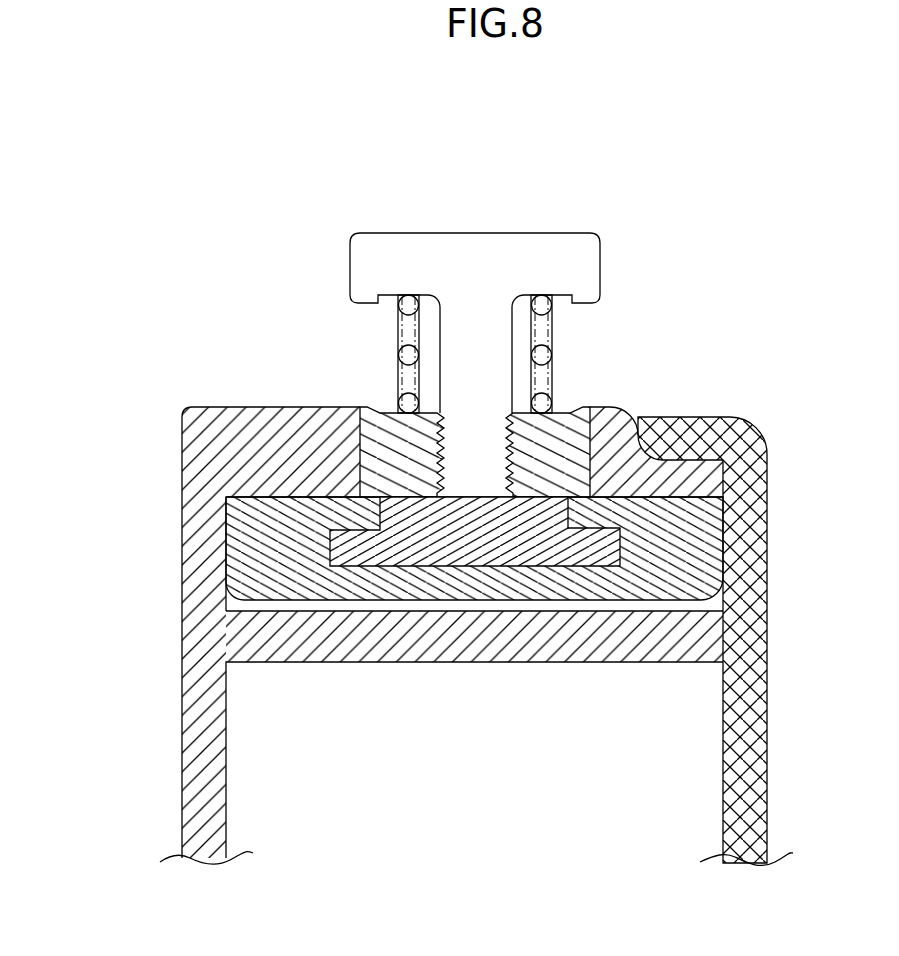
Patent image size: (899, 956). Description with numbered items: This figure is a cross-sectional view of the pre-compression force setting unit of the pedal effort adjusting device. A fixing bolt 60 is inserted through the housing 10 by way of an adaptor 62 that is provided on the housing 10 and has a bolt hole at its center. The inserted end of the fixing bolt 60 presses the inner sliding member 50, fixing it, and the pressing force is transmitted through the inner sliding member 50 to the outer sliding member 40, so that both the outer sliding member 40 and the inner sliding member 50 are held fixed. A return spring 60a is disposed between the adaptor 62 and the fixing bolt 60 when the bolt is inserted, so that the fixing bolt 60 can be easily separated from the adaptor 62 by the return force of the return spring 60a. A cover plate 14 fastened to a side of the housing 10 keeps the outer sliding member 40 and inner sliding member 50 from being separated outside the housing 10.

The housing 10 is at (174, 645).
The cover plate 14 is at (753, 710).
The outer sliding member 40 is at (675, 570).
The inner sliding member 50 is at (530, 529).
The fixing bolt 60 is at (472, 232).
The return spring 60a is at (410, 355).
The adaptor 62 is at (560, 420).